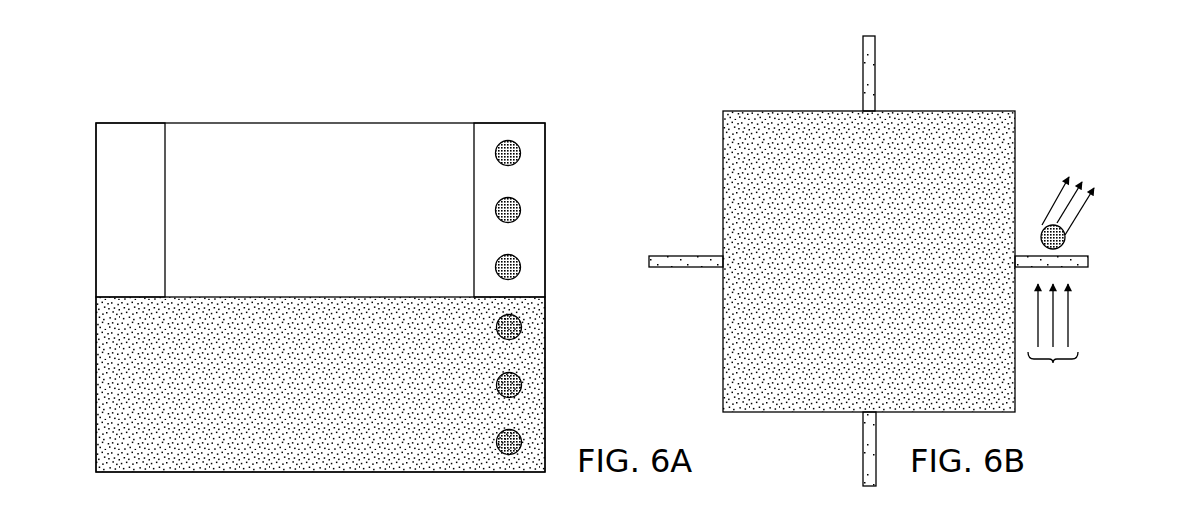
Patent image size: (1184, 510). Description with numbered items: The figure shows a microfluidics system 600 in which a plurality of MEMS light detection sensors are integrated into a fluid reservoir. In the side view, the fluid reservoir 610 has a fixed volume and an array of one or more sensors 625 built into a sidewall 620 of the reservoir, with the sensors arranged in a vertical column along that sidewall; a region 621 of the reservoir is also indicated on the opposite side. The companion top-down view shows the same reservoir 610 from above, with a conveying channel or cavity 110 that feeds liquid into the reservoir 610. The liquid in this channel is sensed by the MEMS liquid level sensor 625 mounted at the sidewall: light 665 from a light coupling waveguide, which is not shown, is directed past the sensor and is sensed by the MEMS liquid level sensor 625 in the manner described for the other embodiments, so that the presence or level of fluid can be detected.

In FIG. 6A, the microfluidics system 600 is at (314, 277).
In FIG. 6A, the fluid reservoir 610 is at (339, 215).
In FIG. 6B, the fluid reservoir 610 is at (889, 270).
In FIG. 6A, the sidewall 620 is at (508, 123).
In FIG. 6A, the side region 621 is at (100, 233).
In FIG. 6A, the MEMS liquid level sensor 625 is at (518, 258).
In FIG. 6B, the MEMS liquid level sensor 625 is at (1063, 247).
In FIG. 6B, the conveying channel or cavity 110 is at (1080, 268).
In FIG. 6B, the light 665 is at (1053, 337).